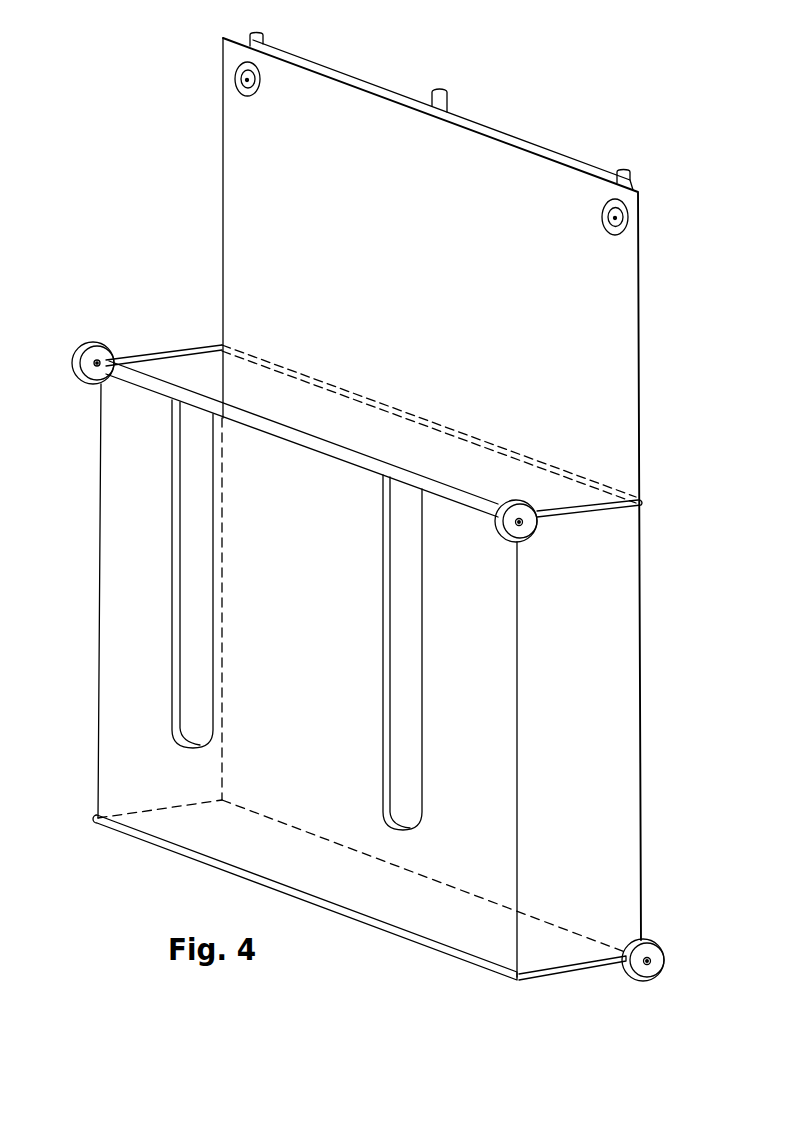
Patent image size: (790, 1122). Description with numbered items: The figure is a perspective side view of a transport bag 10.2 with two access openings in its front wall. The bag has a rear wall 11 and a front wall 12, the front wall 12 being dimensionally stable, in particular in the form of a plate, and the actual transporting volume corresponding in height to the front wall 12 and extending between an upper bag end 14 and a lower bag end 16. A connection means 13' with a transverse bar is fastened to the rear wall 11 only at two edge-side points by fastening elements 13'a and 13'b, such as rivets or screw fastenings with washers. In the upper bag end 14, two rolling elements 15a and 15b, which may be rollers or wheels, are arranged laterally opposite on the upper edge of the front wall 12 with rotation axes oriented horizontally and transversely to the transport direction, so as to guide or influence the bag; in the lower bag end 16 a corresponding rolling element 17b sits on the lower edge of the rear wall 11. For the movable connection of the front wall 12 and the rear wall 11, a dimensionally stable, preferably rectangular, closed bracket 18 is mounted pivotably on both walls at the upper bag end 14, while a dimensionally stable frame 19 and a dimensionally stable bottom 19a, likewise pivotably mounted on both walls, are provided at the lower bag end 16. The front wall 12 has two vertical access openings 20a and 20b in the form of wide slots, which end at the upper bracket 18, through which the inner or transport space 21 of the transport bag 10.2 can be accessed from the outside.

The transport bag 10.2 is at (663, 496).
The rear wall 11 is at (552, 341).
The front wall 12 is at (278, 696).
The connection means 13' is at (441, 112).
The fastening element 13'a is at (291, 53).
The fastening element 13'b is at (658, 192).
The upper bag end 14 is at (148, 396).
The rolling element 15a is at (98, 352).
The rolling element 15b is at (530, 527).
The lower bag end 16 is at (238, 887).
The rolling element 17b is at (648, 951).
The bracket 18 is at (620, 509).
The frame 19 is at (562, 975).
The bottom 19a is at (228, 850).
The access opening 20a is at (188, 583).
The access opening 20b is at (405, 704).
The transport space 21 is at (288, 398).